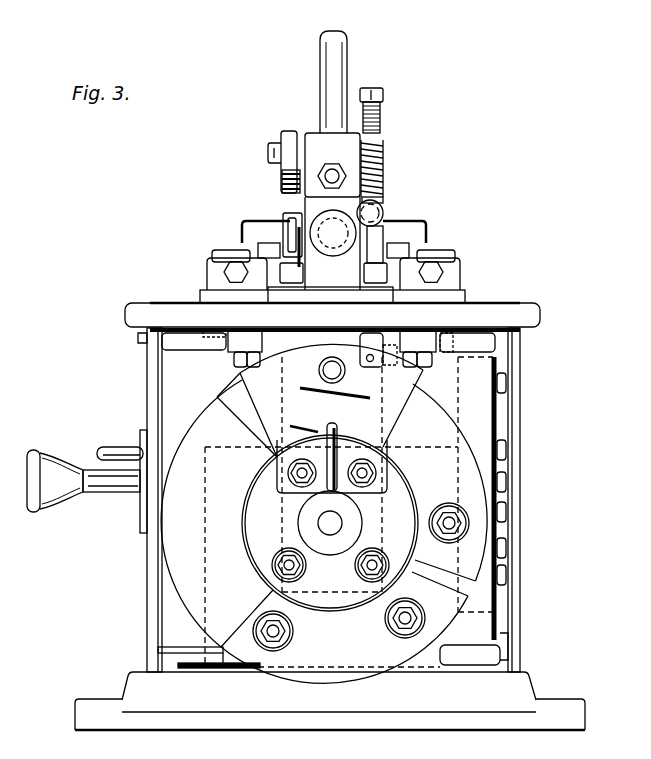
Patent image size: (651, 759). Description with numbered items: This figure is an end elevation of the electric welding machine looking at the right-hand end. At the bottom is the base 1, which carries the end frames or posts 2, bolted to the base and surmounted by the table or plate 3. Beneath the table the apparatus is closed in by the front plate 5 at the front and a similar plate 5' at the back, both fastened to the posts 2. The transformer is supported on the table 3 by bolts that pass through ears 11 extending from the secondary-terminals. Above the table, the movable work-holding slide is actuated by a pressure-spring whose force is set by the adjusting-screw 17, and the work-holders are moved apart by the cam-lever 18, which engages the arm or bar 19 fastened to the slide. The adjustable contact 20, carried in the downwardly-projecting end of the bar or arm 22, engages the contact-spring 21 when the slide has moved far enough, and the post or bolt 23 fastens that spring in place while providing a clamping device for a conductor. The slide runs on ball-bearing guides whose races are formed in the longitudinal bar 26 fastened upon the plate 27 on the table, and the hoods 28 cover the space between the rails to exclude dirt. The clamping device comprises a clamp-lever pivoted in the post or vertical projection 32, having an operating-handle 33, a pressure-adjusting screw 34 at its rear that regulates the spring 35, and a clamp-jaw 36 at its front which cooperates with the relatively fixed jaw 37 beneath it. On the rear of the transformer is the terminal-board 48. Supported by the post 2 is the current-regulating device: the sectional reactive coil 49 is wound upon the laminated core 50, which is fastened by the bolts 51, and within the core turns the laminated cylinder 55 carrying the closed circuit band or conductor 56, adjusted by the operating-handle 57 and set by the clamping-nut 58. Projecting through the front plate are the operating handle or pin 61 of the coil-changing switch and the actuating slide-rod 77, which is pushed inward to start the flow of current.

The base 1 is at (523, 685).
The end frames or posts 2 is at (333, 512).
The table or plate 3 is at (537, 313).
The front plate or cover 5 is at (180, 500).
The back plate 5' is at (502, 500).
The ears 11 is at (328, 348).
The adjusting-screw 17 is at (333, 245).
The cam-lever 18 is at (330, 250).
The arm or bar 19 is at (283, 230).
The adjustable contact 20 is at (381, 200).
The contact-spring 21 is at (381, 237).
The bar or arm 22 is at (377, 192).
The post or bolt 23 is at (377, 343).
The longitudinal bar 26 is at (248, 250).
The plate 27 is at (455, 298).
The hoods 28 is at (257, 220).
The post or vertical projection 32 is at (315, 148).
The operating-handle 33 is at (347, 55).
The pressure-adjusting screw 34 is at (383, 112).
The spring 35 is at (382, 160).
The clamp-jaw 36 is at (288, 136).
The fixed jaw 37 is at (283, 192).
The terminal-board 48 is at (496, 424).
The sectional reactive coil 49 is at (324, 510).
The laminated core 50 is at (348, 621).
The bolts 51 is at (273, 634).
The laminated cylinder 55 is at (341, 603).
The closed circuit band or conductor 56 is at (319, 367).
The operating-handle 57 is at (343, 372).
The clamping-nut 58 is at (355, 521).
The operating handle or pin 61 is at (125, 447).
The actuating slide-rod 77 is at (100, 494).